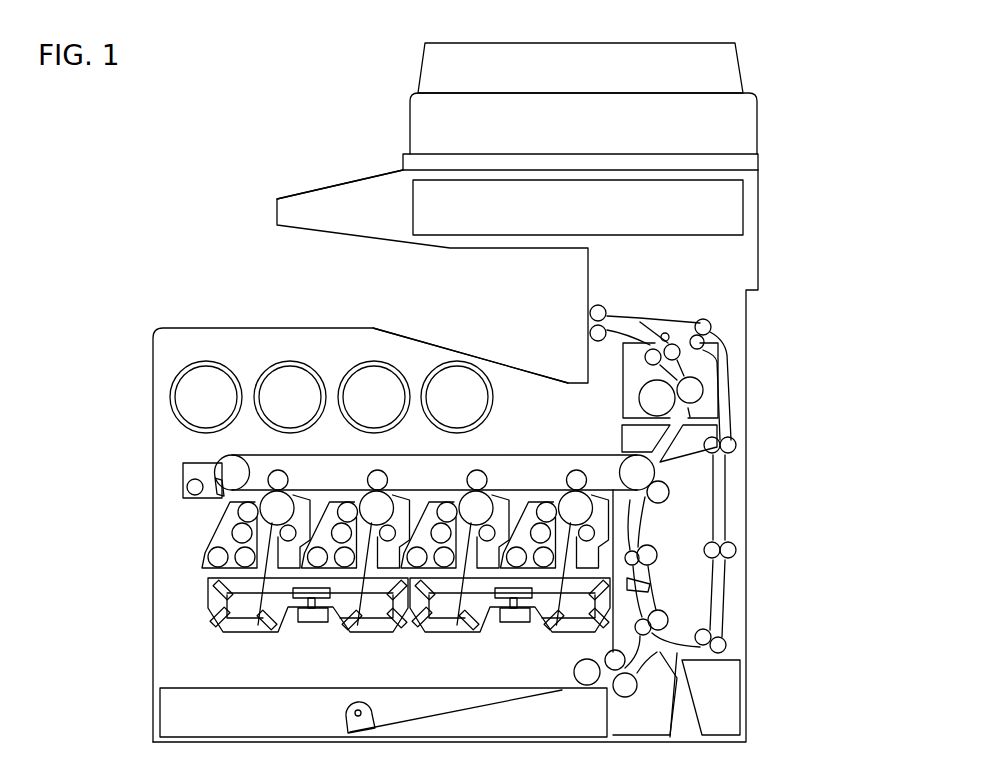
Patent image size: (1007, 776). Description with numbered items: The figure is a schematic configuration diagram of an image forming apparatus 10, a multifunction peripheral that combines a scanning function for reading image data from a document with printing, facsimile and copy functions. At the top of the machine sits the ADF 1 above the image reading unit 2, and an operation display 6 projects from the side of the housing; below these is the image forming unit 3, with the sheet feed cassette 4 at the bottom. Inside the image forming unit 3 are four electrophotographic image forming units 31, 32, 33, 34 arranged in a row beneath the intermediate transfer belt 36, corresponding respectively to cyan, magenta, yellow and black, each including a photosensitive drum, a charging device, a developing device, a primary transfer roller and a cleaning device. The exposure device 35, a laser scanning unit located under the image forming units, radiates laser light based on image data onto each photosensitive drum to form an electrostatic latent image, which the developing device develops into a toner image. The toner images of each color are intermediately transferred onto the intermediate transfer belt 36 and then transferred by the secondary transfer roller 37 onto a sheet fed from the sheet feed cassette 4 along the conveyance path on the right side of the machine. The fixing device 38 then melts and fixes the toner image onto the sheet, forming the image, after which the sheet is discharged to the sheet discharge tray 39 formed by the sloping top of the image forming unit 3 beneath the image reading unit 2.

The image forming apparatus 10 is at (236, 99).
The ADF 1 is at (752, 81).
The image reading unit 2 is at (752, 209).
The image forming unit 3 is at (170, 352).
The sheet feed cassette 4 is at (160, 718).
The operation display 6 is at (316, 181).
The image forming unit 31 is at (296, 488).
The image forming unit 32 is at (398, 488).
The image forming unit 33 is at (495, 485).
The image forming unit 34 is at (590, 485).
The exposure device 35 is at (220, 628).
The intermediate transfer belt 36 is at (545, 453).
The secondary transfer roller 37 is at (663, 508).
The fixing device 38 is at (700, 362).
The sheet discharge tray 39 is at (442, 343).